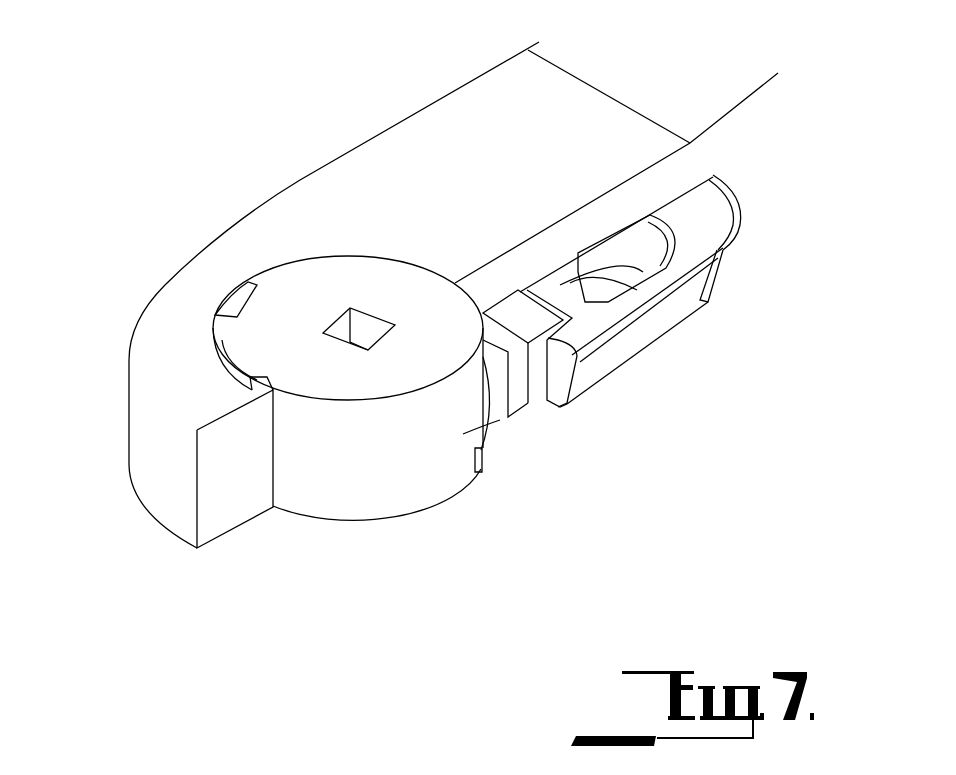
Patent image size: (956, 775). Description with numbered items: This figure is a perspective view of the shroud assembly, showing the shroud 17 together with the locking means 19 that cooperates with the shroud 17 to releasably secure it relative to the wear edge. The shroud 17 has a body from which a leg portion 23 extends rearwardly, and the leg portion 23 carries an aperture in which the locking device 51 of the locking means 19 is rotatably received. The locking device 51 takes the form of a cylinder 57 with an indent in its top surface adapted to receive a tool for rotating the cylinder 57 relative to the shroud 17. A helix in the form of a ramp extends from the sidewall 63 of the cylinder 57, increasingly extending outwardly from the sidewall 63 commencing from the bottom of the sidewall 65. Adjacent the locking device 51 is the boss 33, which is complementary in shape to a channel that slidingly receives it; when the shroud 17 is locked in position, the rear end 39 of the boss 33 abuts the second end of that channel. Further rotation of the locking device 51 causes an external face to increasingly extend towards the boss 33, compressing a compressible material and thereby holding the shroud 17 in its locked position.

The shroud 17 is at (605, 112).
The leg portion 23 is at (612, 140).
The boss 33 is at (712, 215).
The rear end of the boss 39 is at (640, 272).
The locking device 51 is at (212, 326).
The cylinder 57 is at (263, 354).
The sidewall 63 is at (368, 477).
The bottom of the sidewall 65 is at (433, 483).
The locking means 19 is at (518, 397).